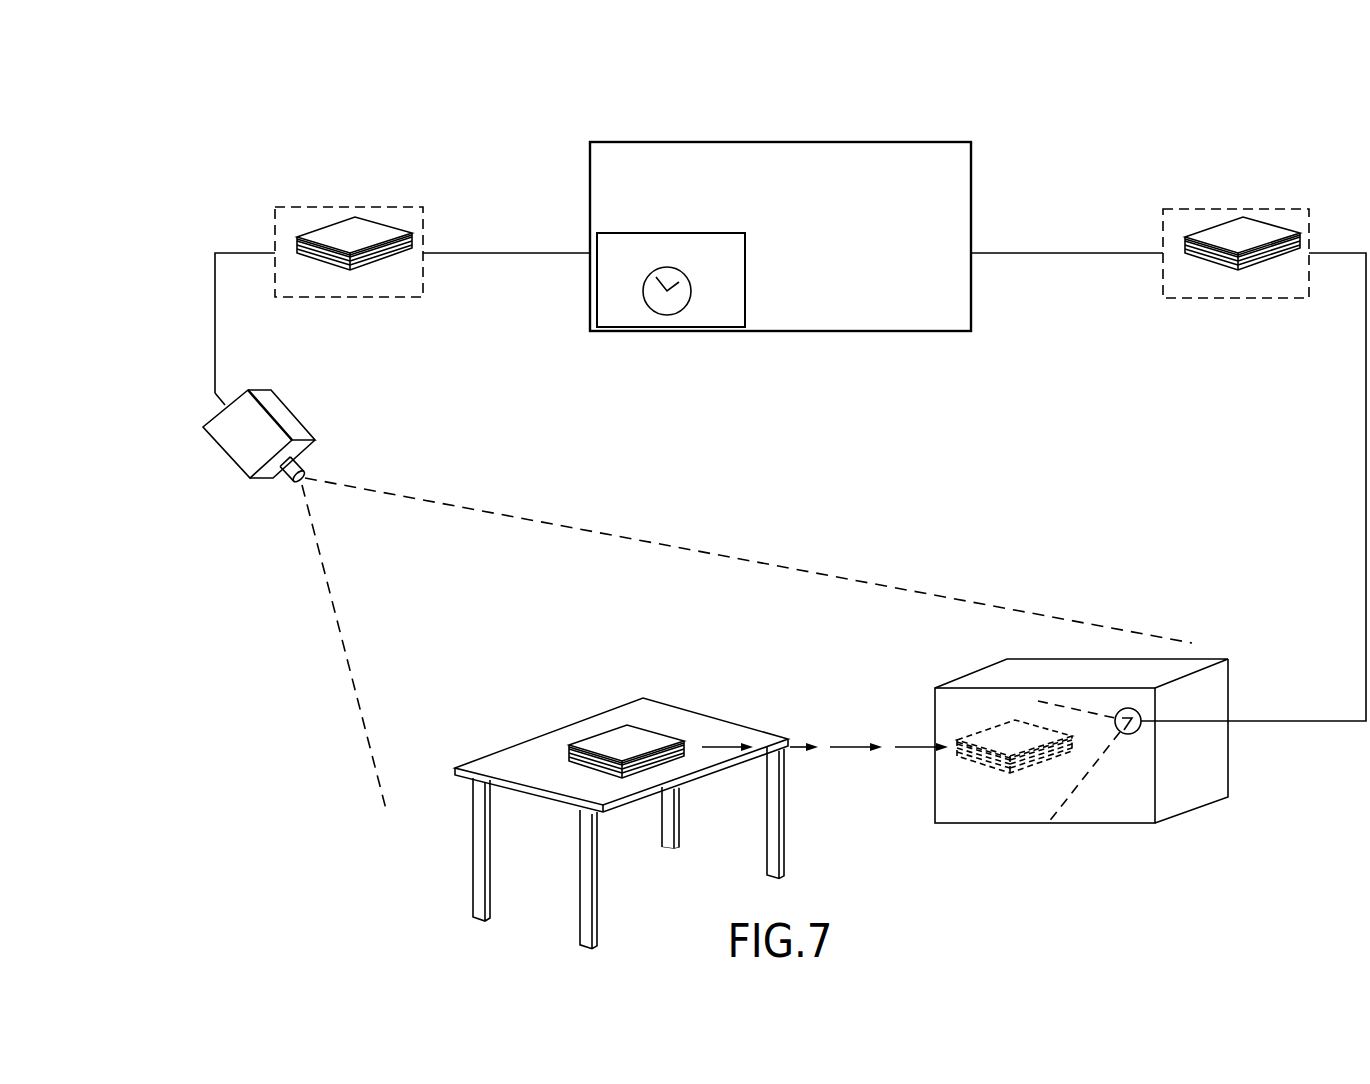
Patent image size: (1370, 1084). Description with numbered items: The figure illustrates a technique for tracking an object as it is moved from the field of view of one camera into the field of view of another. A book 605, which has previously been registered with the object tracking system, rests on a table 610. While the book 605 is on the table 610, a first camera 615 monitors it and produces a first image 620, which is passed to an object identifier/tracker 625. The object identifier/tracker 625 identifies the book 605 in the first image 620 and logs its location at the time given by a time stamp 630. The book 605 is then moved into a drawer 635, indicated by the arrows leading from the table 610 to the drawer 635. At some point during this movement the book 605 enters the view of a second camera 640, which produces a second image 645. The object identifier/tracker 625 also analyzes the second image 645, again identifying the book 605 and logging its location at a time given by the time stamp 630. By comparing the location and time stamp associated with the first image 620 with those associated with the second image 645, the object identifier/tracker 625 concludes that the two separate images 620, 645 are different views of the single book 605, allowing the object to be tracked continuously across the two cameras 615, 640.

The book 605 is at (588, 733).
The table 610 is at (662, 702).
The first camera 615 is at (277, 410).
The first image 620 is at (348, 207).
The object identifier/tracker 625 is at (640, 142).
The time stamp 630 is at (613, 233).
The drawer 635 is at (967, 823).
The second camera 640 is at (1137, 717).
The second image 645 is at (1195, 209).